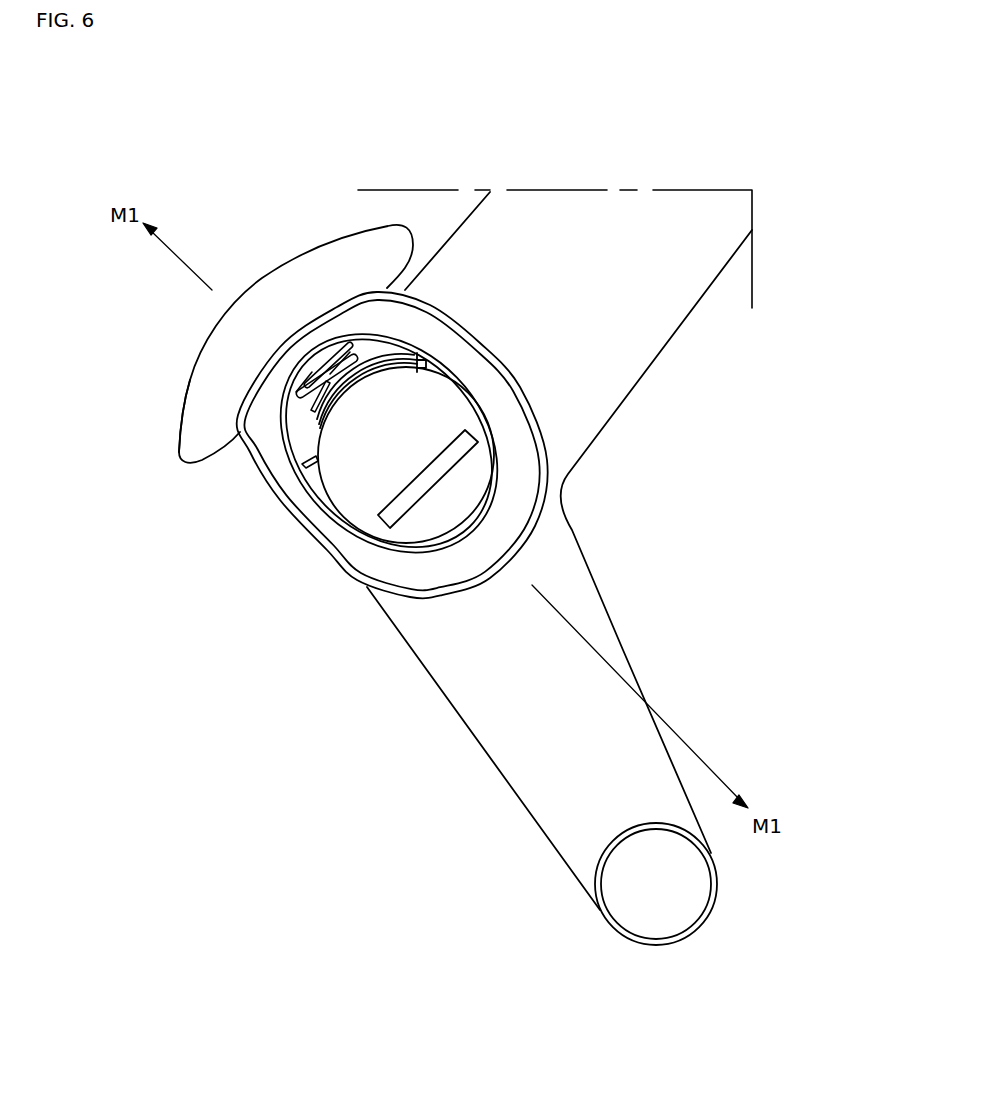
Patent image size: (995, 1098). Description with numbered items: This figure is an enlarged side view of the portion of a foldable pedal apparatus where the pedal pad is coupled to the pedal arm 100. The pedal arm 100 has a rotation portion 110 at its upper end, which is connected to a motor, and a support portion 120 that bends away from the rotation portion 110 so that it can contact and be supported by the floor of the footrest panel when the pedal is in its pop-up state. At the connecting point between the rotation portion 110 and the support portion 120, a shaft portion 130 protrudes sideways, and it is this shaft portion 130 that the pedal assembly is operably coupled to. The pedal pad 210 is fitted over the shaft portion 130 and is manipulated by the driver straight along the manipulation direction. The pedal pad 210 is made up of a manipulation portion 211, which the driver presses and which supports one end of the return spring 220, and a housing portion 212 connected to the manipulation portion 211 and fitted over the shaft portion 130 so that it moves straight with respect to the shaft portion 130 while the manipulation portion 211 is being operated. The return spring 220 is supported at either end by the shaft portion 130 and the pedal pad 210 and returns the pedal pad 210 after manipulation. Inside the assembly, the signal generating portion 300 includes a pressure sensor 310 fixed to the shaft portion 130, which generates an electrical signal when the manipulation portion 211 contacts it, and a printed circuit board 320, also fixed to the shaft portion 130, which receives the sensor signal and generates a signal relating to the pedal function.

The pedal arm 100 is at (508, 799).
The rotation portion 110 is at (578, 226).
The support portion 120 is at (560, 820).
The shaft portion 130 is at (436, 408).
The pedal pad 210 is at (301, 246).
The manipulation portion 211 is at (204, 390).
The housing portion 212 is at (343, 543).
The return spring 220 is at (303, 395).
The signal generating portion 300 is at (491, 469).
The pressure sensor 310 is at (305, 467).
The printed circuit board 320 is at (447, 463).